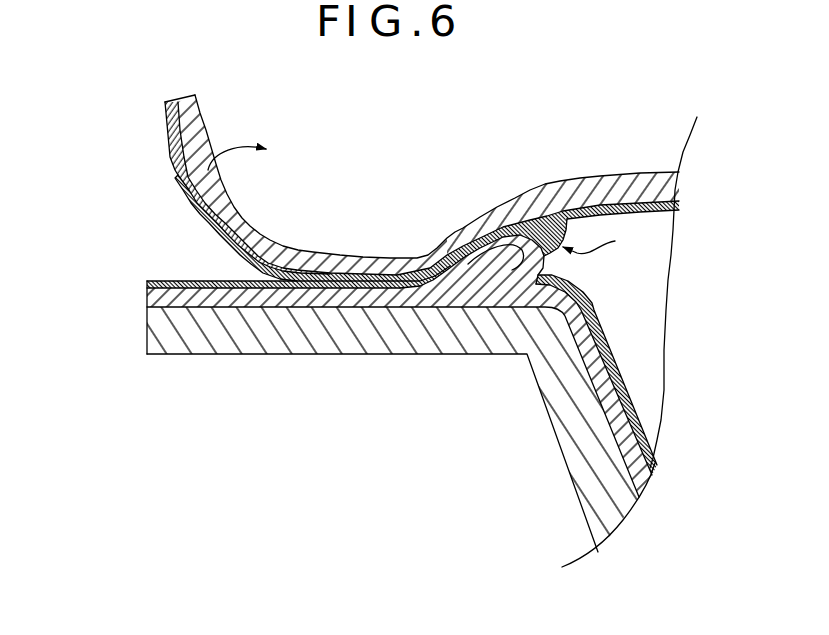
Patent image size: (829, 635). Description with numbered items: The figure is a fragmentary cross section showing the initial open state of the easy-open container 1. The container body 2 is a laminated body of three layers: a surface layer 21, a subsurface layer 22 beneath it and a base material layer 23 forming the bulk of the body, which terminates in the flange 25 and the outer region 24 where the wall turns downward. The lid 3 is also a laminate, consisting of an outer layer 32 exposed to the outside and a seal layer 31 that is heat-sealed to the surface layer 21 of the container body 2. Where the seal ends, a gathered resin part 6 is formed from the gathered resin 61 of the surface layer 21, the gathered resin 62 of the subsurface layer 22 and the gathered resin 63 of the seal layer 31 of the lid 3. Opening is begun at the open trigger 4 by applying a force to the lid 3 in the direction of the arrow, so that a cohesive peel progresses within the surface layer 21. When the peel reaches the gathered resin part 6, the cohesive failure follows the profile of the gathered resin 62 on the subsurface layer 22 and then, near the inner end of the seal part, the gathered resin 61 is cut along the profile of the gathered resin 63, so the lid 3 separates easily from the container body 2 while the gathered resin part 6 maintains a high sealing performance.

The easy-open container 1 is at (483, 112).
The container body 2 is at (82, 220).
The surface layer 21 is at (176, 178).
The subsurface layer 22 is at (147, 297).
The base material layer 23 is at (147, 343).
The end surface 24 is at (647, 368).
The flange 25 is at (367, 308).
The lid 3 is at (75, 110).
The seal layer 31 is at (173, 160).
The outer layer 32 is at (183, 118).
The open trigger 4 is at (428, 212).
The gathered resin part 6 is at (735, 203).
The gathered resin of the surface layer 61 is at (546, 250).
The gathered resin of the subsurface layer 62 is at (545, 267).
The gathered resin of the seal layer 63 is at (567, 218).